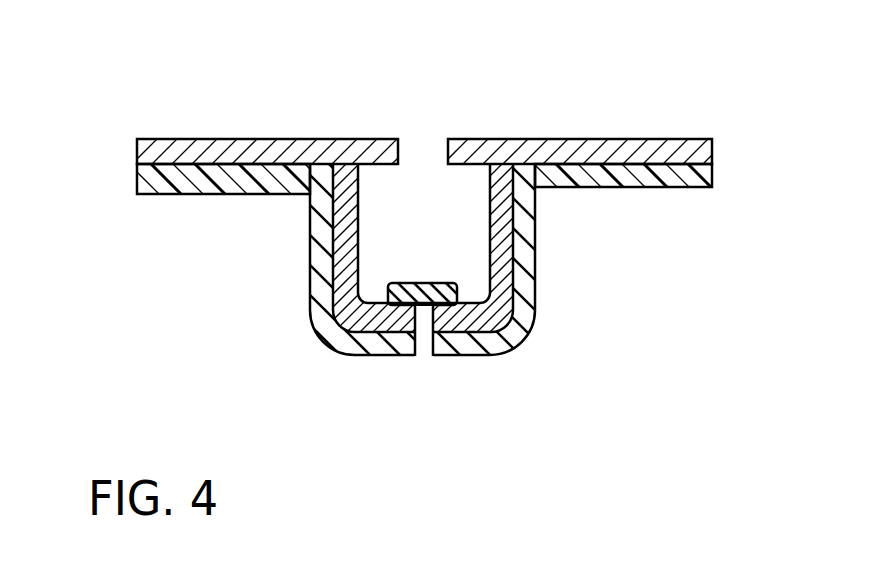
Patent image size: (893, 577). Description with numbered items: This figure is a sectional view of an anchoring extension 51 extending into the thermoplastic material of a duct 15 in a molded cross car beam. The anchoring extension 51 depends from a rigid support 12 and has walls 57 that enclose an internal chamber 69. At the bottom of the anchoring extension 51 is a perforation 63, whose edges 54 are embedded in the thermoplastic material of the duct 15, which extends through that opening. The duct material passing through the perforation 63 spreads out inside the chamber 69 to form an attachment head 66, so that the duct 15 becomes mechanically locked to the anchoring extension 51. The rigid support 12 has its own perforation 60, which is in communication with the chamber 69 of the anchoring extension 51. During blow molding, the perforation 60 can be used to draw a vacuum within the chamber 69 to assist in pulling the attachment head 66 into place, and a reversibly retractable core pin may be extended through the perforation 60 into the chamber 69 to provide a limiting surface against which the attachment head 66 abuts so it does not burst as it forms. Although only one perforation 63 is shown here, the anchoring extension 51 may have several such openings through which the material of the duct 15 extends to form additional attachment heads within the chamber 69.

The rigid support 12 is at (217, 138).
The duct 15 is at (190, 195).
The anchoring extension 51 is at (514, 242).
The edges 54 is at (378, 332).
The walls 57 is at (337, 287).
The perforation 60 is at (418, 147).
The perforation 63 is at (422, 350).
The attachment head 66 is at (417, 290).
The chamber 69 is at (441, 206).